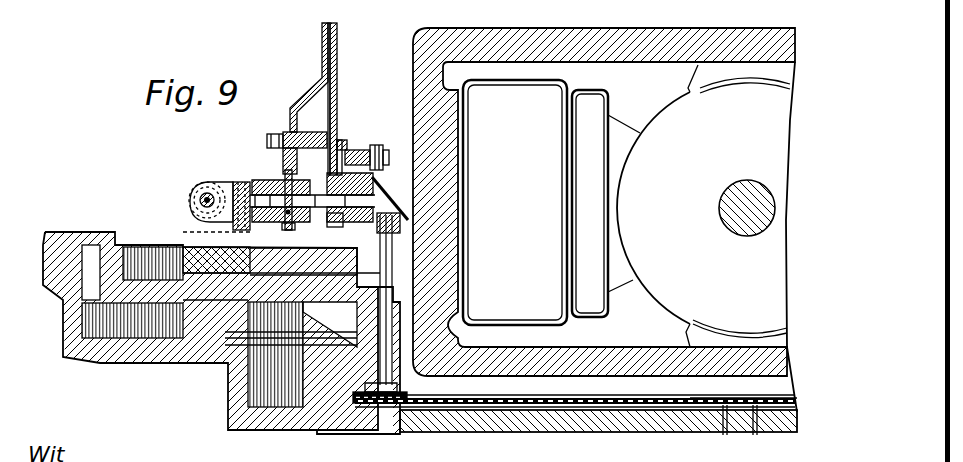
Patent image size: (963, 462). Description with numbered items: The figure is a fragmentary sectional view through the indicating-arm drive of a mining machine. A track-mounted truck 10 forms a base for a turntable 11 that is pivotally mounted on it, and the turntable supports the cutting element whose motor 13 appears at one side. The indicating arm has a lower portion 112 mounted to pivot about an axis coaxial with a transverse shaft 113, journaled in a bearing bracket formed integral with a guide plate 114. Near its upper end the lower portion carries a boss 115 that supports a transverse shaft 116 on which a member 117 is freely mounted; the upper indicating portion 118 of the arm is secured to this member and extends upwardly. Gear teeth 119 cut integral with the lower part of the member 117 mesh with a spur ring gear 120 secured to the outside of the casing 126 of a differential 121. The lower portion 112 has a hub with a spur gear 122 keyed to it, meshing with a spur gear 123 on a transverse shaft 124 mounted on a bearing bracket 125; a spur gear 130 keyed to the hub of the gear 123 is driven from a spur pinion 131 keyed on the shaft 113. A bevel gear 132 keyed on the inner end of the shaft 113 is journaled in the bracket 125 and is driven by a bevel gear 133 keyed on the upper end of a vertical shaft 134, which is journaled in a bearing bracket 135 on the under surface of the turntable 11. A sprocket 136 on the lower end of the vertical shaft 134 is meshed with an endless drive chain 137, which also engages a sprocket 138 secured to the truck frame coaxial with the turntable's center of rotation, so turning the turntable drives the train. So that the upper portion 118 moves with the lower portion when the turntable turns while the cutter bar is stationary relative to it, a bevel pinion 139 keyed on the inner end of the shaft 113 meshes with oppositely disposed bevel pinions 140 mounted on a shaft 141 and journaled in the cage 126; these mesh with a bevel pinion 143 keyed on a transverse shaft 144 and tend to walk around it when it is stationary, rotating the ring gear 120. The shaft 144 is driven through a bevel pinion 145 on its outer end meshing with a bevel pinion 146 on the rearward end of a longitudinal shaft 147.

The truck 10 is at (573, 433).
The turntable 11 is at (118, 232).
The motor 13 is at (588, 25).
The lower portion of indicating arm 112 is at (280, 152).
The transverse shaft 113 is at (285, 167).
The guide plate 114 is at (337, 50).
The boss 115 is at (313, 135).
The transverse shaft 116 is at (338, 135).
The member 117 is at (284, 123).
The upper indicating portion 118 is at (319, 33).
The gear teeth 119 is at (277, 175).
The spur ring gear 120 is at (276, 259).
The differential 121 is at (216, 261).
The spur gear 122 is at (335, 227).
The spur gear 123 is at (340, 140).
The transverse shaft 124 is at (365, 158).
The bearing bracket 125 is at (395, 170).
The casing 126 is at (258, 182).
The spur gear 130 is at (352, 147).
The spur pinion 131 is at (375, 245).
The bevel gear 132 is at (395, 192).
The bevel gear 133 is at (375, 215).
The vertical shaft 134 is at (392, 280).
The bearing bracket 135 is at (393, 322).
The sprocket 136 is at (380, 405).
The endless drive chain 137 is at (518, 394).
The sprocket 138 is at (703, 399).
The bevel pinion 139 is at (270, 217).
The bevel pinions 140 is at (281, 285).
The shaft 141 is at (258, 280).
The bevel pinion 143 is at (235, 233).
The transverse shaft 144 is at (182, 229).
The bevel pinion 145 is at (190, 208).
The bevel pinion 146 is at (188, 201).
The longitudinal shaft 147 is at (190, 190).